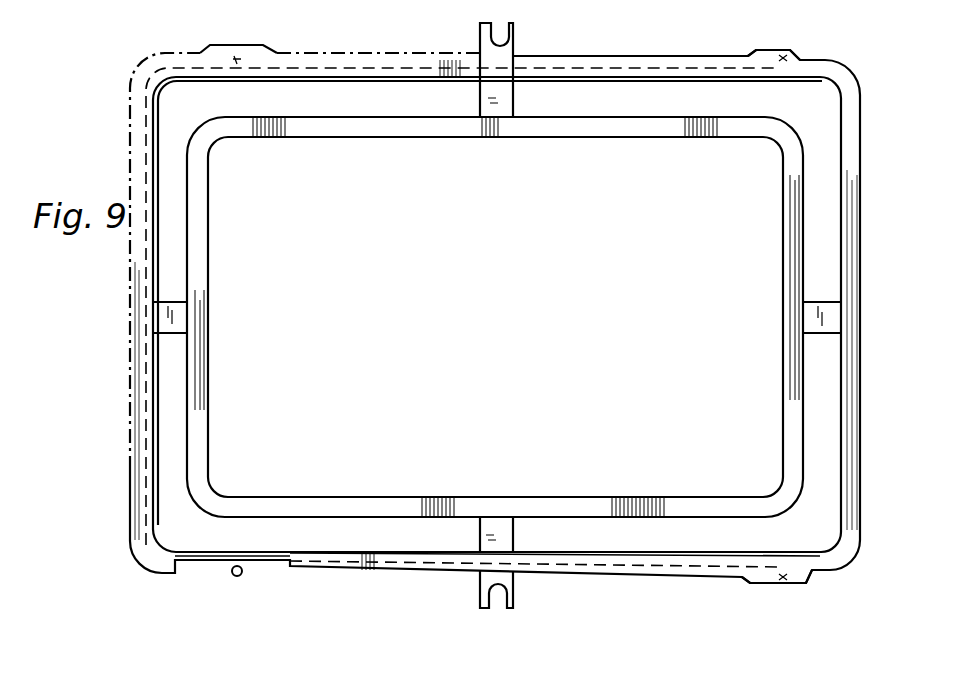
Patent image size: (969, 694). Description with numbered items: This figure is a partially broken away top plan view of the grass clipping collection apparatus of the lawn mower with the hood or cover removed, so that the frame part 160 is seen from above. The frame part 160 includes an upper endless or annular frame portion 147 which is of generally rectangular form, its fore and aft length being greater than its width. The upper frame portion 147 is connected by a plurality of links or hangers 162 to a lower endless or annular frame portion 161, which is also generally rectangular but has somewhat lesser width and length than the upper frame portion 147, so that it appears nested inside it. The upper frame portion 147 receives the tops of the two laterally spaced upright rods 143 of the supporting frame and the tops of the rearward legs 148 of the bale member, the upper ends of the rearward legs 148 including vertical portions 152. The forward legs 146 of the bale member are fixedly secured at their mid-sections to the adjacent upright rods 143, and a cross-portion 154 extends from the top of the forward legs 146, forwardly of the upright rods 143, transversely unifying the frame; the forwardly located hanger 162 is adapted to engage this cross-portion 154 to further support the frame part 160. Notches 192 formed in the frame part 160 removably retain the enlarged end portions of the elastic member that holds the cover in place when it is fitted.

The upright rod 143 is at (247, 55).
The forward leg 146 is at (270, 72).
The upper annular frame portion 147 is at (843, 130).
The rearward leg 148 is at (597, 70).
The vertical portion 152 is at (786, 58).
The cross-portion 154 is at (160, 222).
The frame part 160 is at (869, 225).
The lower annular frame portion 161 is at (796, 224).
The link or hanger 162 is at (490, 97).
The notch 192 is at (502, 45).